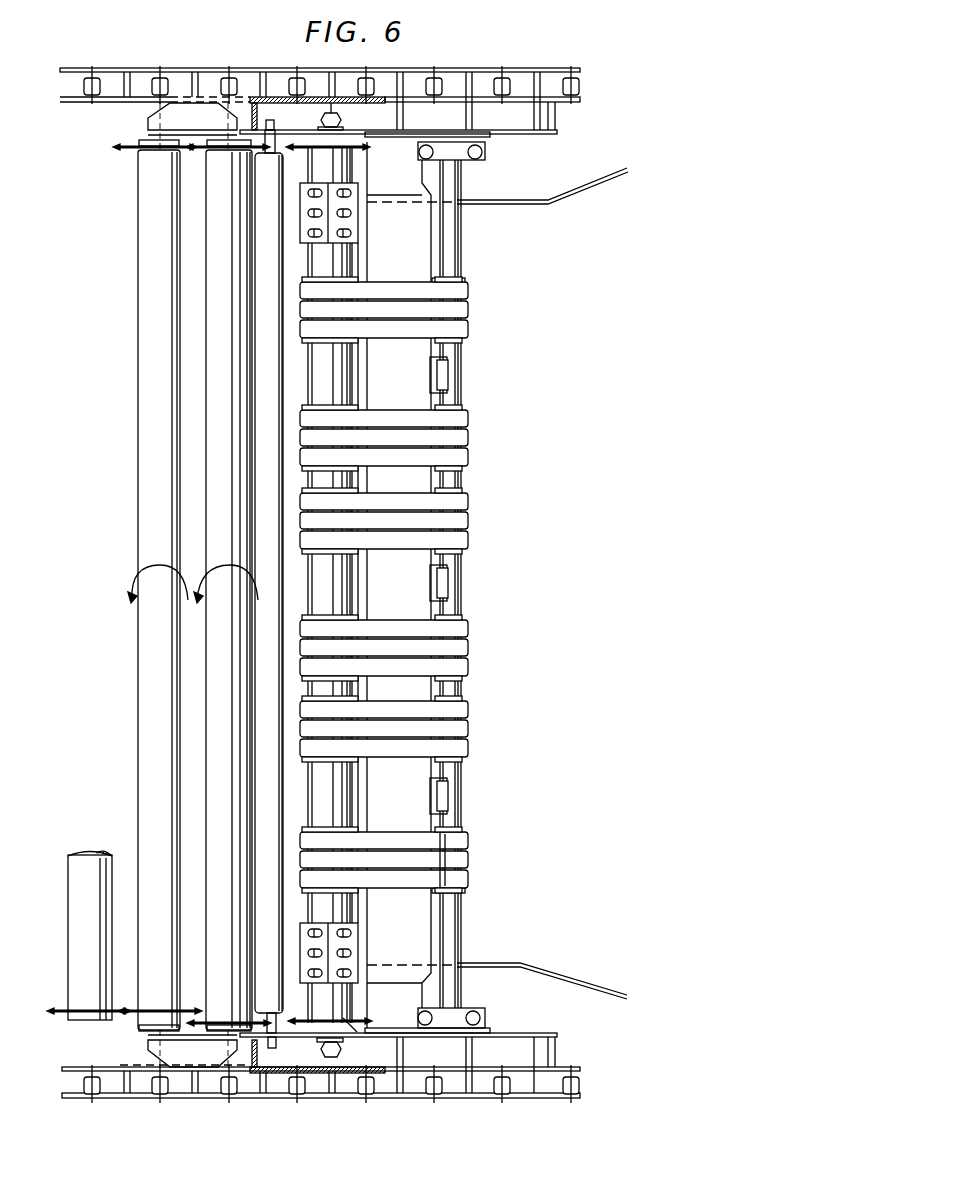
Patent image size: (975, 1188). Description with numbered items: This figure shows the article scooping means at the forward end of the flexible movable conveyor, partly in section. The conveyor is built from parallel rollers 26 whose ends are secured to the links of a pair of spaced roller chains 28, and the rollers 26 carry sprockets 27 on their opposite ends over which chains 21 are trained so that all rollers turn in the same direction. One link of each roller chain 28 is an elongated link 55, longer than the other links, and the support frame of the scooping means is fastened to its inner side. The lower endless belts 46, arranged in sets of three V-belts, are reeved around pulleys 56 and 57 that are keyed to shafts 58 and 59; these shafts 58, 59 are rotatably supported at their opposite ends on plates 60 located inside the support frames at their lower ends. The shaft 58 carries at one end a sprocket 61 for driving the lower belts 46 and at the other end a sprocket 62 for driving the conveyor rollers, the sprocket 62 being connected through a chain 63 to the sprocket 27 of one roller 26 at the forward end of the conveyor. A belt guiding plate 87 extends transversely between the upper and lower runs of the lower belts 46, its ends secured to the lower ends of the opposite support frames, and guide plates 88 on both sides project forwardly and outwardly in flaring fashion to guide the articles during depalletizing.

The chains 21 is at (191, 150).
The rollers 26 is at (215, 488).
The sprockets 27 is at (140, 150).
The roller chains 28 is at (130, 72).
The lower endless belts 46 is at (455, 308).
The elongated link 55 is at (398, 72).
The pulley 56 is at (303, 407).
The pulley 57 is at (455, 612).
The shaft 58 is at (345, 253).
The shaft 59 is at (458, 240).
The plates 60 is at (285, 97).
The sprocket 61 is at (348, 147).
The sprocket 62 is at (345, 1030).
The chain 63 is at (258, 1070).
The belt guiding plate 87 is at (406, 599).
The guide plates 88 is at (555, 192).